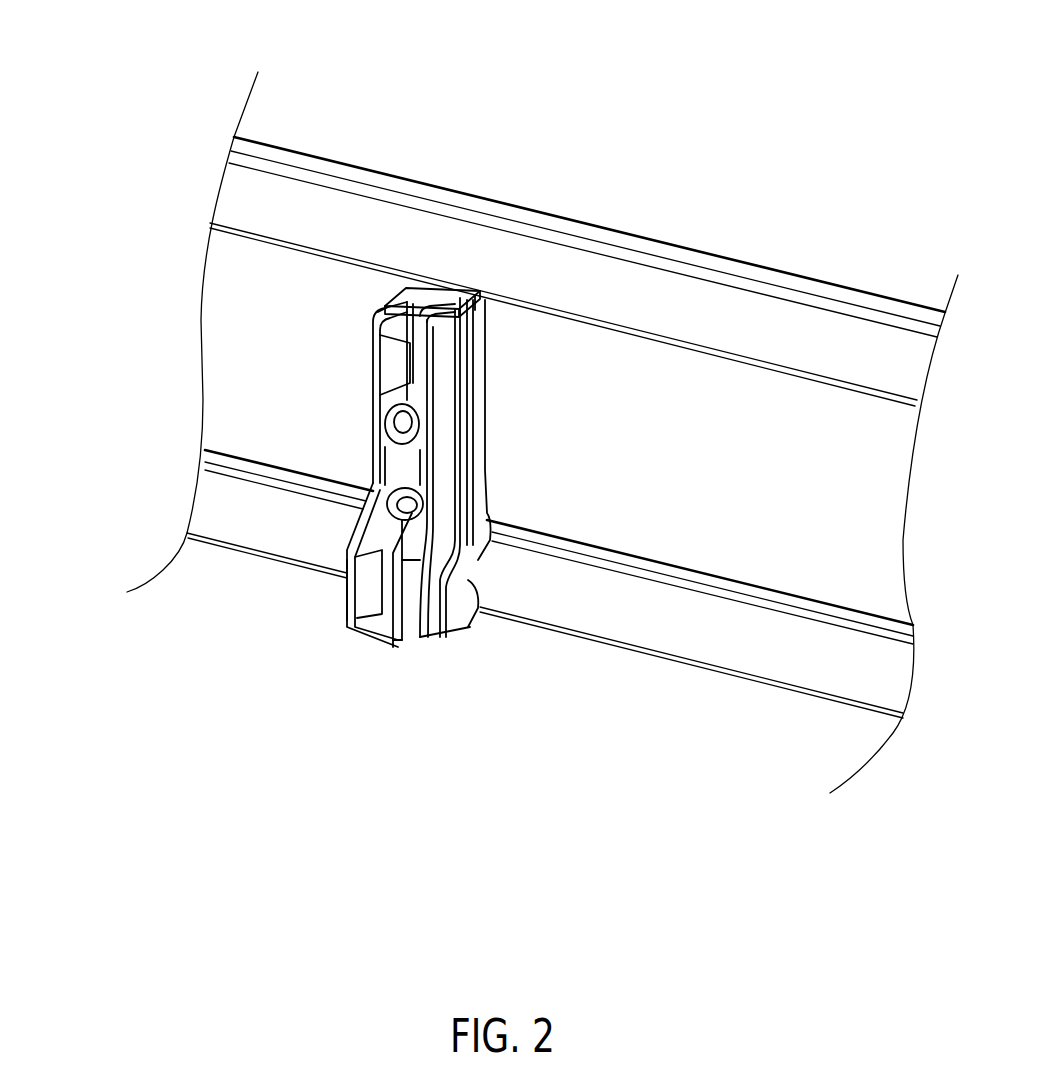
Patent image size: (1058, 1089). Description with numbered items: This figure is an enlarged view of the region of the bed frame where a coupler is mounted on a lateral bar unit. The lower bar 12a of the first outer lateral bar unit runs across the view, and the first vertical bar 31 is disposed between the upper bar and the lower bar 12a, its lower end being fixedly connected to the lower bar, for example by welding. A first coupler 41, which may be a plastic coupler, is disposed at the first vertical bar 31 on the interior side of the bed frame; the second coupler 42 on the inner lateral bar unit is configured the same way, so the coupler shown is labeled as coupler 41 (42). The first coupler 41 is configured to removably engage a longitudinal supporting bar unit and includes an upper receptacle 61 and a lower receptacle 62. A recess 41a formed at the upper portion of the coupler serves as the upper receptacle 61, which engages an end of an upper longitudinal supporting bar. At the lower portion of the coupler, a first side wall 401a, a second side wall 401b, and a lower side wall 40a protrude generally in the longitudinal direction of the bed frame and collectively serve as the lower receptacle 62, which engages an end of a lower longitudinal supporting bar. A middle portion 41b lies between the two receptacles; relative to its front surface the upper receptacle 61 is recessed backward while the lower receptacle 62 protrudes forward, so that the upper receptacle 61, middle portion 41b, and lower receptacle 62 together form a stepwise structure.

The lower bar 12a is at (777, 642).
The first coupler 41 is at (437, 452).
The second coupler 42 is at (587, 377).
The first vertical bar 31 is at (443, 282).
The recess 41a is at (480, 290).
The middle portion 41b is at (403, 463).
The upper receptacle 61 is at (383, 302).
The lower receptacle 62 is at (397, 647).
The lower side wall 40a is at (360, 633).
The first side wall 401a is at (345, 577).
The second side wall 401b is at (412, 567).